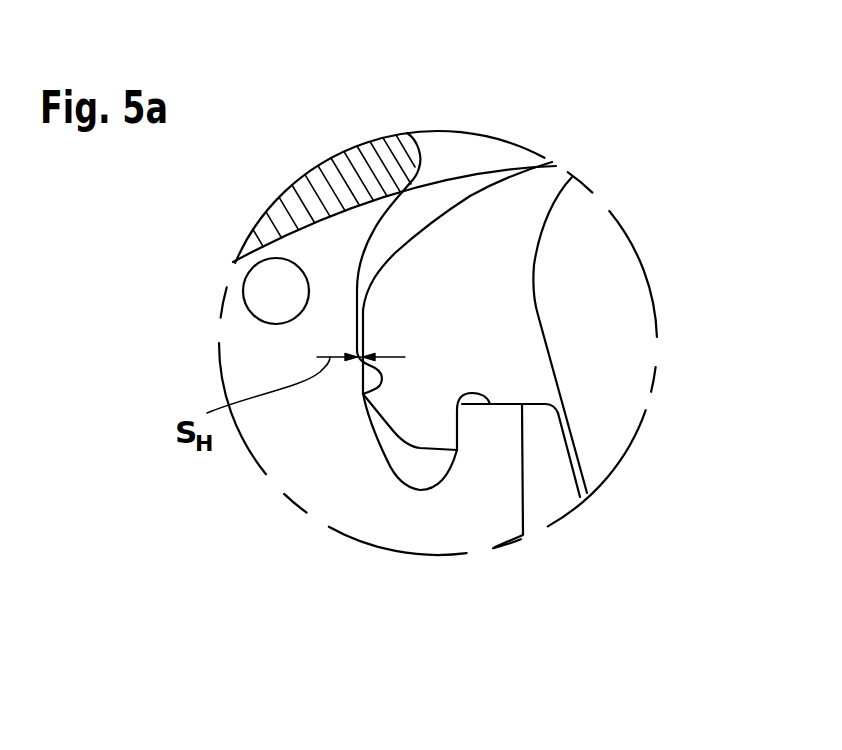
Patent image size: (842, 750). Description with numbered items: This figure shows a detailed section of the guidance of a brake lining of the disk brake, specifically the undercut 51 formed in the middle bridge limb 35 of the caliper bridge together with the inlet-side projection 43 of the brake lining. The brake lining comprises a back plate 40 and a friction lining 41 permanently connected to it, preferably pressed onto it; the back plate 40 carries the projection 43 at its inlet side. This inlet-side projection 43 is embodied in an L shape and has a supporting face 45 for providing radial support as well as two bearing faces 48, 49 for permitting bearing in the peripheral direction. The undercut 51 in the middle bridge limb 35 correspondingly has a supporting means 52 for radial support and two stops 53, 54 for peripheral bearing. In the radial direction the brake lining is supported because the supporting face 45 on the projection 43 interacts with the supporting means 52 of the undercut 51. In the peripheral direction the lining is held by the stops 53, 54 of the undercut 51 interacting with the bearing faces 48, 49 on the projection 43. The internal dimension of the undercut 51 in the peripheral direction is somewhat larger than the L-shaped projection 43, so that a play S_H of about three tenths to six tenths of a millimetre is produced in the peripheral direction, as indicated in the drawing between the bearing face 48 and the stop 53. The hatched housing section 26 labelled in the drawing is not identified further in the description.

The housing section (hatched) 26 is at (350, 187).
The back plate 40 is at (526, 158).
The inlet-side projection 43 is at (450, 232).
The friction lining 41 is at (560, 257).
The middle bridge limb 35 is at (237, 319).
The bearing face 48 is at (357, 340).
The stop 53 is at (362, 393).
The undercut 51 is at (402, 460).
The stop 54 is at (457, 450).
The bearing face 49 is at (458, 448).
The supporting means 52 is at (497, 400).
The supporting face 45 is at (507, 404).